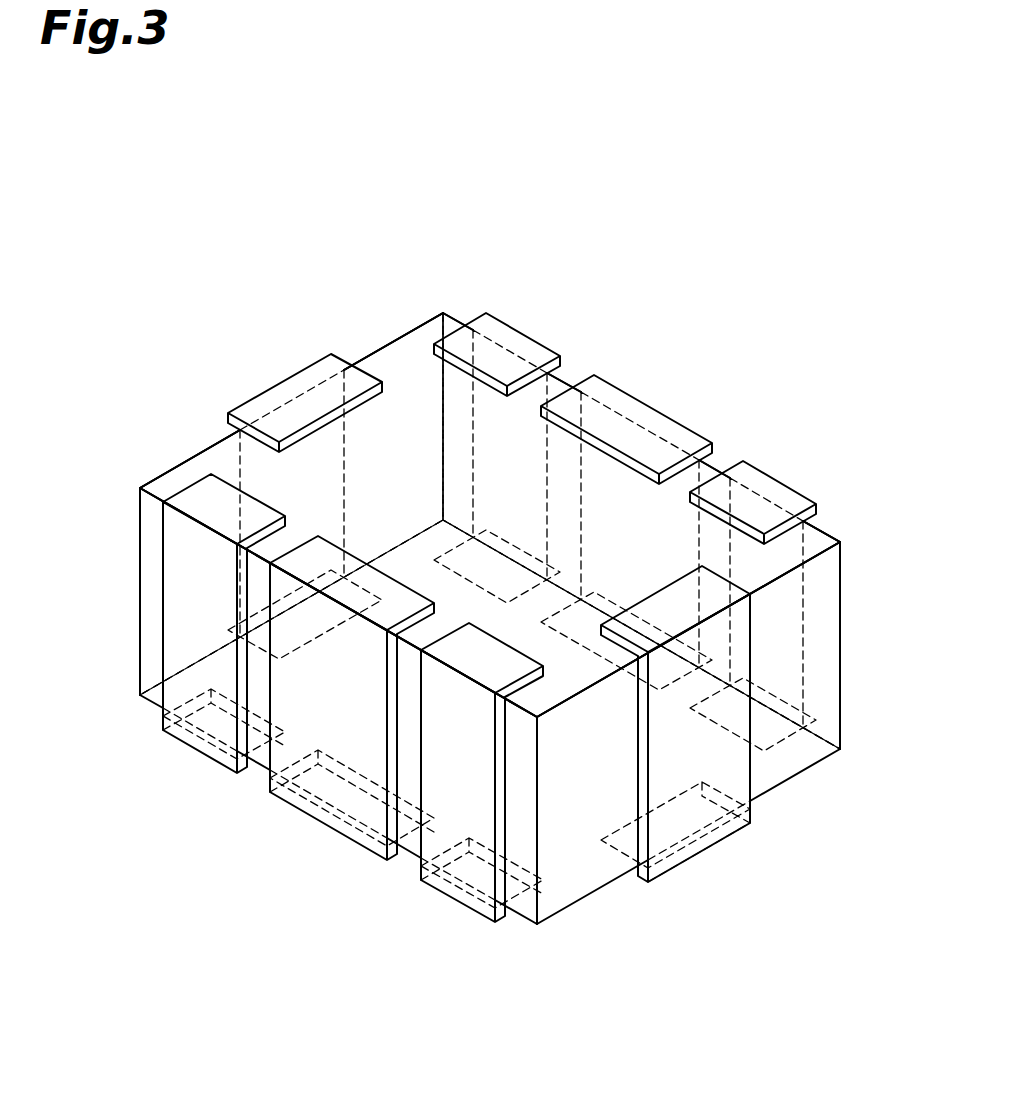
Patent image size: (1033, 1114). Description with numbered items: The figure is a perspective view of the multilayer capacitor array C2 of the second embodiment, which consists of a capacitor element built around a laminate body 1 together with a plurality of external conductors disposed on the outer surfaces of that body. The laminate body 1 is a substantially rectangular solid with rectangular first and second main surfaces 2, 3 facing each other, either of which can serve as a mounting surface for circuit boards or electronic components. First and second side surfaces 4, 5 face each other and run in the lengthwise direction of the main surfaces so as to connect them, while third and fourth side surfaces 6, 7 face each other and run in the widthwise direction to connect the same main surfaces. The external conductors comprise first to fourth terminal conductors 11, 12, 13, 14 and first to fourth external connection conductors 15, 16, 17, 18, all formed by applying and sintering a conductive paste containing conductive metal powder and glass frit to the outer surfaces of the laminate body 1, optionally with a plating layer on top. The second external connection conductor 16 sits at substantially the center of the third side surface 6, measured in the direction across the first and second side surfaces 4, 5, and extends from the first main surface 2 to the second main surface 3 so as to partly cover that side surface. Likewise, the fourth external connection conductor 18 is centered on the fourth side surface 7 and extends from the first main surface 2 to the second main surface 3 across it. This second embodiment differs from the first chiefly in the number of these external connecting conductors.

The multilayer capacitor array C2 is at (796, 290).
The laminate body 1 is at (843, 620).
The first main surface 2 is at (403, 385).
The second main surface 3 is at (570, 875).
The first side surface 4 is at (830, 678).
The second side surface 5 is at (407, 760).
The third side surface 6 is at (220, 468).
The fourth side surface 7 is at (775, 765).
The first terminal conductor 11 is at (515, 325).
The second terminal conductor 12 is at (203, 752).
The third terminal conductor 13 is at (455, 916).
The fourth terminal conductor 14 is at (762, 467).
The first external connection conductor 15 is at (645, 405).
The second external connection conductor 16 is at (272, 386).
The third external connection conductor 17 is at (310, 818).
The fourth external connection conductor 18 is at (705, 855).